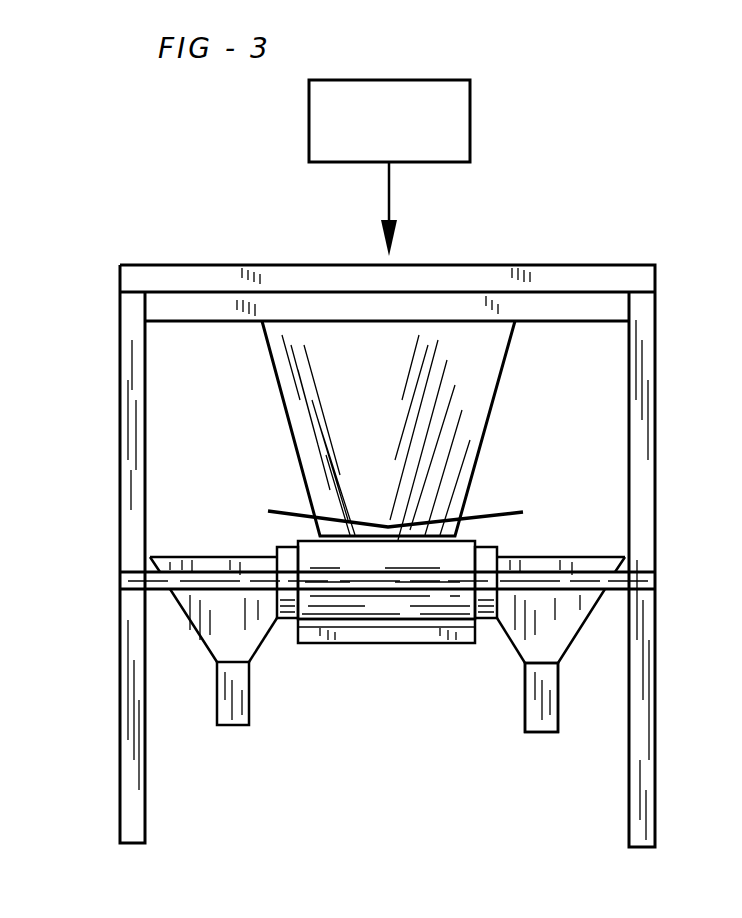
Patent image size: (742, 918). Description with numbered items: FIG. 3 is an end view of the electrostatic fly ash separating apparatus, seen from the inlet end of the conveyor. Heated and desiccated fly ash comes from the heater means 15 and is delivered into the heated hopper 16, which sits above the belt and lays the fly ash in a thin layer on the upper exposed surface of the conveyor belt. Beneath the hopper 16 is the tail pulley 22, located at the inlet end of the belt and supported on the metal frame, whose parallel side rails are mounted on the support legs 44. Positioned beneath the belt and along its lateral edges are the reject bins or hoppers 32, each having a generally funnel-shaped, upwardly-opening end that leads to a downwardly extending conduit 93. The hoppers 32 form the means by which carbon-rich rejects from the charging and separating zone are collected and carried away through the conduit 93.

The heater means 15 is at (413, 135).
The heated hopper 16 is at (477, 400).
The tail pulley 22 is at (498, 550).
The reject bins or hoppers 32 is at (583, 626).
The support legs 44 is at (637, 826).
The downwardly extending conduit 93 is at (528, 715).